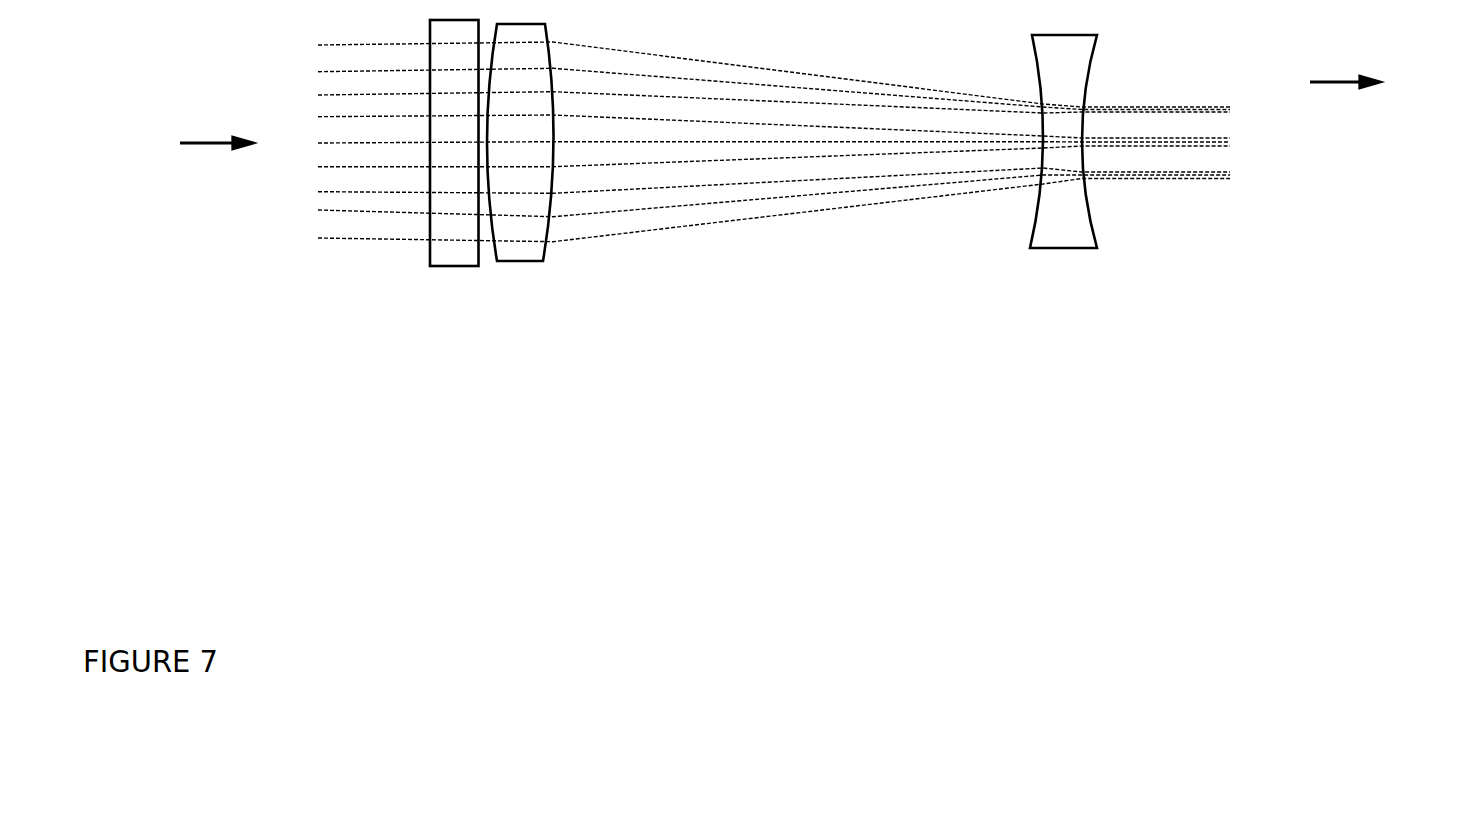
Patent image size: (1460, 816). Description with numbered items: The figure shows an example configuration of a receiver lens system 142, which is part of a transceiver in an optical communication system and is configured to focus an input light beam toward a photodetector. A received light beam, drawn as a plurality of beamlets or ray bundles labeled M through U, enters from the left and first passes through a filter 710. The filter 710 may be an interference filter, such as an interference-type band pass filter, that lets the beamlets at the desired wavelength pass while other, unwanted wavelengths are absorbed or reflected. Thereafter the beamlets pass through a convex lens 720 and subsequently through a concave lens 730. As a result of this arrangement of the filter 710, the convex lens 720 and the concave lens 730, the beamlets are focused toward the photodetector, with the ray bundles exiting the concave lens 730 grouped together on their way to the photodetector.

The receiver lens system 142 is at (168, 634).
The filter 710 is at (400, 269).
The convex lens 720 is at (573, 263).
The concave lens 730 is at (1122, 269).